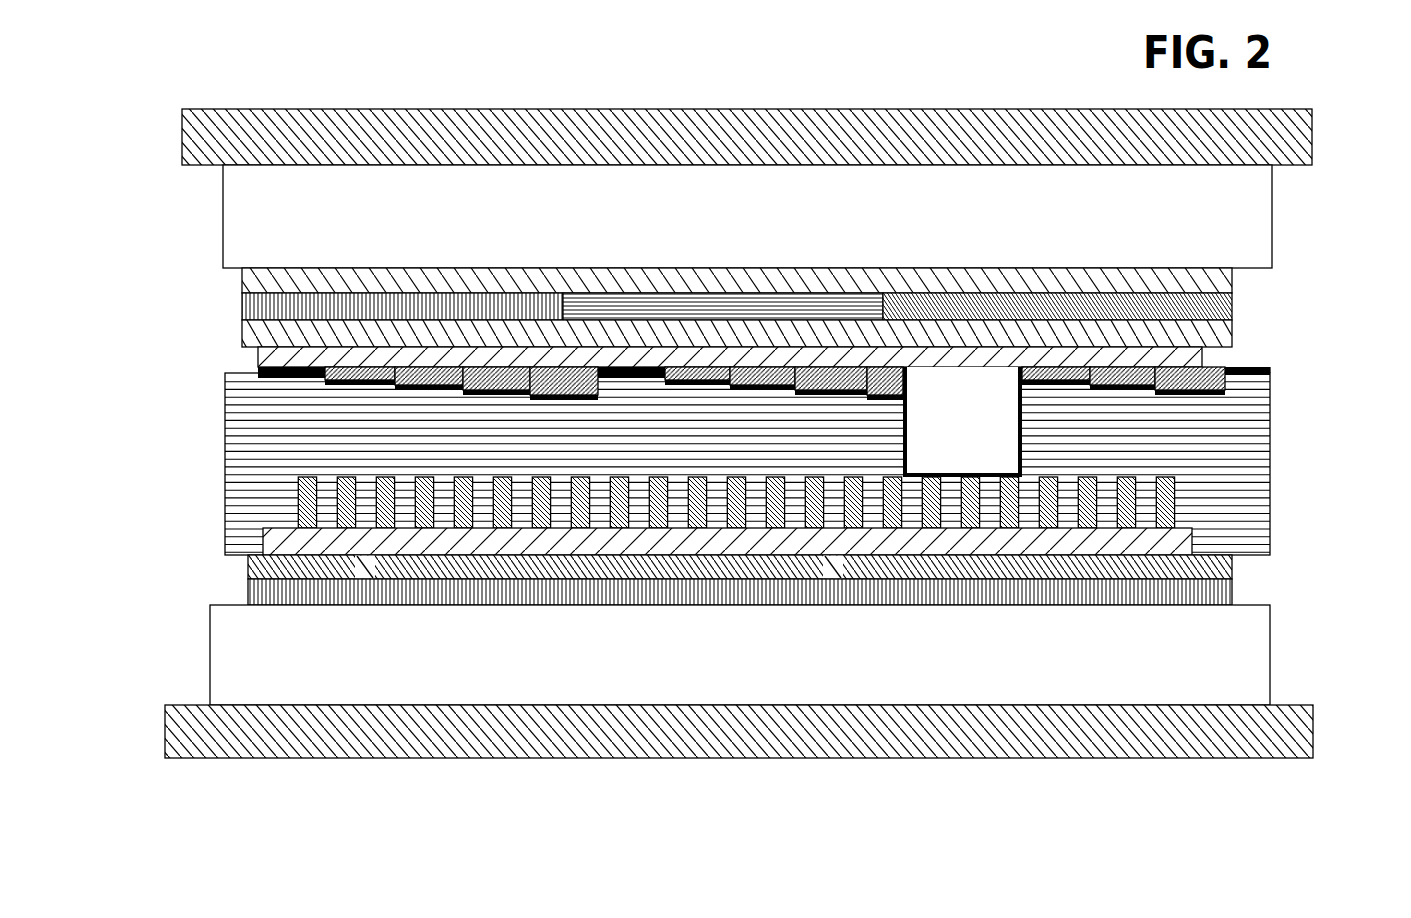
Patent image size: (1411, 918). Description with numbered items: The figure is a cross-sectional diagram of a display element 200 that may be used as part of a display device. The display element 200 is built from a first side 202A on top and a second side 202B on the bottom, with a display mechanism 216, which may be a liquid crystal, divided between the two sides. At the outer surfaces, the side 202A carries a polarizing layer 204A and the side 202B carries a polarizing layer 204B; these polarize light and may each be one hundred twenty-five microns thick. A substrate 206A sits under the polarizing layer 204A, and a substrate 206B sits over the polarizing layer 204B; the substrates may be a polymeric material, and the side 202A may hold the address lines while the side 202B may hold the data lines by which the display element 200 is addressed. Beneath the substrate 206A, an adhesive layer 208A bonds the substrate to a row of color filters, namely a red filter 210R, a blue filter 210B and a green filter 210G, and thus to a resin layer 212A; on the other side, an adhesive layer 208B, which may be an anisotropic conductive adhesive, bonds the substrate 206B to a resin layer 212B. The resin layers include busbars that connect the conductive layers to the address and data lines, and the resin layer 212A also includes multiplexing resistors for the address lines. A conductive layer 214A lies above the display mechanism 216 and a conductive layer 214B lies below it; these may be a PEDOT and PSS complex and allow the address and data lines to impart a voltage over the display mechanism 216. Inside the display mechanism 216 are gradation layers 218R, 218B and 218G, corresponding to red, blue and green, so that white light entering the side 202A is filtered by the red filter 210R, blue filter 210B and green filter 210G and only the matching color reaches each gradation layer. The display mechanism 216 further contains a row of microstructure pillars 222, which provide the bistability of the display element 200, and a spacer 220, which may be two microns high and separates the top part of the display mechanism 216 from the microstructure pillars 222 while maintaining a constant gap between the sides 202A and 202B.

The display element 200 is at (613, 793).
The first side 202A is at (730, 285).
The second side 202B is at (740, 573).
The polarizing layer 204A is at (1303, 136).
The polarizing layer 204B is at (1300, 727).
The substrate 206A is at (1258, 208).
The substrate 206B is at (1255, 648).
The adhesive layer 208A is at (1228, 282).
The adhesive layer 208B is at (1228, 593).
The red filter 210R is at (247, 311).
The blue filter 210B is at (868, 303).
The green filter 210G is at (1232, 303).
The resin layer 212A is at (1232, 332).
The resin layer 212B is at (1233, 563).
The conductive layer 214A is at (1195, 353).
The conductive layer 214B is at (1178, 538).
The display mechanism 216 is at (1237, 457).
The gradation layer 218R is at (467, 393).
The gradation layer 218B is at (830, 378).
The gradation layer 218G is at (1173, 383).
The spacer 220 is at (980, 432).
The microstructure pillars 222 is at (348, 478).